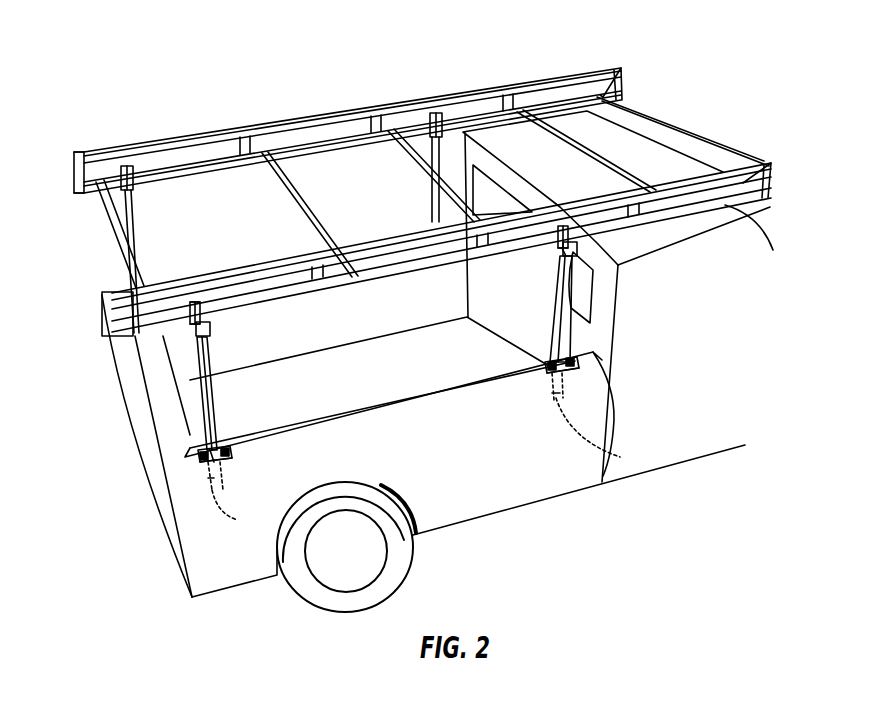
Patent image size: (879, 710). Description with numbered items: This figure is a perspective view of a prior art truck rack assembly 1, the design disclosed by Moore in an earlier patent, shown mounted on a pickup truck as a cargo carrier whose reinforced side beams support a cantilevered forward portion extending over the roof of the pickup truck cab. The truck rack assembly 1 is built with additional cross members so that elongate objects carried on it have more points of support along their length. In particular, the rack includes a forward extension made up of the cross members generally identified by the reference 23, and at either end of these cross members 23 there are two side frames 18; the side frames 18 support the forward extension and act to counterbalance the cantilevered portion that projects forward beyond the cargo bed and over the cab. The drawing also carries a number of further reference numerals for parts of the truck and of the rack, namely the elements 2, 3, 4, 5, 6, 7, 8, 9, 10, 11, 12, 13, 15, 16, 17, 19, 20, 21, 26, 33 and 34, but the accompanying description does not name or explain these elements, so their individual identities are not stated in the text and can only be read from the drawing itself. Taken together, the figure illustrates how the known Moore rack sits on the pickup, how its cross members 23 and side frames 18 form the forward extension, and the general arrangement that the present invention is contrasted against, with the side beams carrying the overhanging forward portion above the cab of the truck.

The truck rack assembly 1 is at (672, 78).
The vehicle 2 is at (508, 493).
The chassis 3 is at (695, 447).
The cargo bed 4 is at (356, 399).
The side wall 5 is at (436, 426).
The bed floor 6 is at (430, 395).
The foot fastening 7 is at (217, 473).
The upright post 8 is at (142, 222).
The upper post end 9 is at (553, 252).
The fastening bolt 10 is at (238, 520).
The side wall upper edge 11 is at (205, 470).
The foot plate 12 is at (198, 460).
The post attachment 13 is at (183, 328).
The connection point 15 is at (183, 333).
The bracket 16 is at (207, 332).
The rear end of load carrier 17 is at (72, 172).
The side frames 18 is at (470, 85).
The lower longitudinal beam 19 is at (547, 82).
The cross member 20 is at (600, 95).
The spacer 21 is at (242, 138).
The cross members 23 is at (676, 138).
The clamp 26 is at (126, 168).
The post section 33 is at (215, 398).
The mounting hole 34 is at (205, 483).